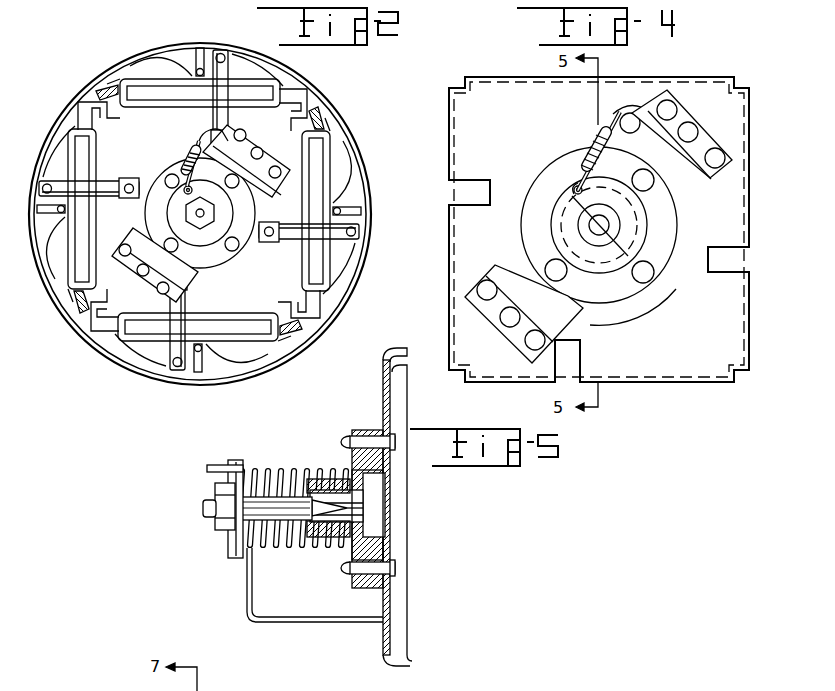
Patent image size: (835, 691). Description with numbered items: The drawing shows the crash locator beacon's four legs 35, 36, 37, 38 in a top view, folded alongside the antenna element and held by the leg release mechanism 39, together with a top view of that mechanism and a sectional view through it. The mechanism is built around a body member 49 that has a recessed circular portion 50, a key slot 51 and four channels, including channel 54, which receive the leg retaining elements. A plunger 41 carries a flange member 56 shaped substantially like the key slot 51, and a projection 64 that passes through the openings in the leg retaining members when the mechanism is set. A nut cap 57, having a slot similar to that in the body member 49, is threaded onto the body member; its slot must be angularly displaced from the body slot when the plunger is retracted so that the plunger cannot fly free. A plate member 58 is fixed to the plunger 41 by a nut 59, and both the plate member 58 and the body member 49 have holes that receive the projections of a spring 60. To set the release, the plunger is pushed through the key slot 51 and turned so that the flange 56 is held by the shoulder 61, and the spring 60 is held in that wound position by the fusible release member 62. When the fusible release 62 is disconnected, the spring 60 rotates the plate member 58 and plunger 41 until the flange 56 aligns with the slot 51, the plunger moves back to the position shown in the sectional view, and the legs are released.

In FIG. 2, the leg 35 is at (128, 57).
In FIG. 2, the leg 36 is at (368, 194).
In FIG. 2, the leg 37 is at (190, 385).
In FIG. 2, the leg 38 is at (42, 162).
In FIG. 2, the leg release mechanism 39 is at (285, 135).
In FIG. 2, the plate member 58 is at (208, 243).
In FIG. 4, the plate member 58 is at (557, 223).
In FIG. 5, the plate member 58 is at (230, 460).
In FIG. 2, the fusible release member 62 is at (185, 150).
In FIG. 4, the fusible release member 62 is at (597, 142).
In FIG. 4, the spring 60 is at (576, 187).
In FIG. 5, the spring 60 is at (272, 547).
In FIG. 5, the plunger 41 is at (270, 507).
In FIG. 5, the body member 49 is at (362, 430).
In FIG. 5, the recessed circular portion 50 is at (360, 533).
In FIG. 5, the key slot 51 is at (337, 483).
In FIG. 5, the flange member 56 is at (323, 543).
In FIG. 5, the nut cap 57 is at (303, 468).
In FIG. 5, the nut 59 is at (223, 525).
In FIG. 5, the shoulder 61 is at (365, 520).
In FIG. 5, the projection 64 is at (380, 500).
In FIG. 5, the channel 54 is at (228, 682).